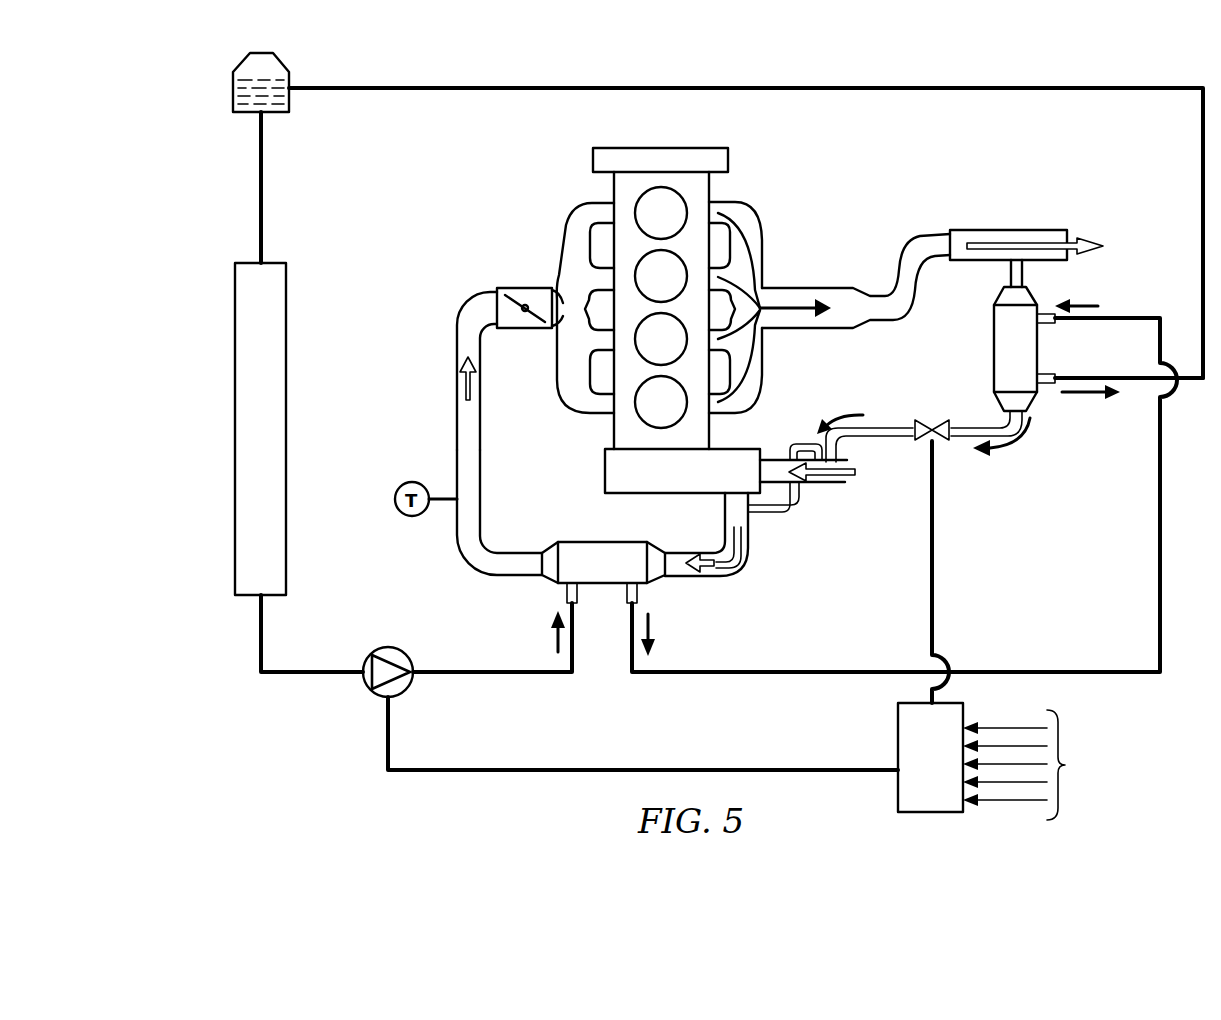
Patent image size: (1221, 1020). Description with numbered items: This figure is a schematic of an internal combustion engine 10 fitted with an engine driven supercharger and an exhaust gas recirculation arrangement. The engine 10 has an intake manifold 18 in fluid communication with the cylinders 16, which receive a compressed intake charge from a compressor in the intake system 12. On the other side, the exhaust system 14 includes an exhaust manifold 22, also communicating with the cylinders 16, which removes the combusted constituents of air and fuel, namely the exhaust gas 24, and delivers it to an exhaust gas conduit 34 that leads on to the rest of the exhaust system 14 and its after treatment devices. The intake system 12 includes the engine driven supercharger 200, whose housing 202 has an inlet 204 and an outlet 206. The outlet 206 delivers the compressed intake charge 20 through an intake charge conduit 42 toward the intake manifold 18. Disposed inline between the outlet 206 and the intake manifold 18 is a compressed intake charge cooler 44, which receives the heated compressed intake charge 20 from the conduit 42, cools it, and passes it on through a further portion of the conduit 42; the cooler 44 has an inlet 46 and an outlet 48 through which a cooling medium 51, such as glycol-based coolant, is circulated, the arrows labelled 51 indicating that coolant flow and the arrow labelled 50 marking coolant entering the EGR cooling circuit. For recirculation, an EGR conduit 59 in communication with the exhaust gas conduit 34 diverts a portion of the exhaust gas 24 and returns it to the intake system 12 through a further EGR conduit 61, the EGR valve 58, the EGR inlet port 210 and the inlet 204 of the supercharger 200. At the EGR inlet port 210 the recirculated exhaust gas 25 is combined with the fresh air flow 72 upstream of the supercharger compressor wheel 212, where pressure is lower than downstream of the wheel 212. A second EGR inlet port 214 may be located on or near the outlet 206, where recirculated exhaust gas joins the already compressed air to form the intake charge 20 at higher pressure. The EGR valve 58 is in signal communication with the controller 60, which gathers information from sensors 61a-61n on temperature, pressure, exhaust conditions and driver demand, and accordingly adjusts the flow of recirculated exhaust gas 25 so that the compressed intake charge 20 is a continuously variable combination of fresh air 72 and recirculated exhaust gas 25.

The internal combustion engine 10 is at (699, 149).
The intake system 12 is at (456, 322).
The exhaust system 14 is at (809, 270).
The cylinders 16 is at (676, 214).
The intake manifold 18 is at (584, 225).
The compressed intake charge 20 is at (460, 368).
The exhaust manifold 22 is at (745, 222).
The exhaust gas 24 is at (790, 300).
The recirculated exhaust gas 25 is at (846, 414).
The exhaust gas conduit 34 is at (992, 228).
The intake charge conduit 42 is at (454, 532).
The compressed intake charge cooler 44 is at (622, 542).
The inlet 46 is at (565, 592).
The outlet 48 is at (636, 590).
The coolant flow into EGR cooler 50 is at (1084, 303).
The cooling medium 51 is at (1083, 395).
The EGR valve 58 is at (940, 441).
The EGR conduit 59 is at (1023, 273).
The controller 60 is at (930, 626).
The EGR conduit 61 is at (893, 427).
The sensors 61a-61n is at (1068, 763).
The fresh air flow 72 is at (850, 478).
The engine driven supercharger 200 is at (605, 462).
The housing 202 is at (633, 495).
The inlet 204 is at (822, 484).
The outlet 206 is at (751, 533).
The EGR inlet port 210 is at (838, 452).
The supercharger compressor wheel 212 is at (752, 443).
The second EGR inlet port 214 is at (751, 510).